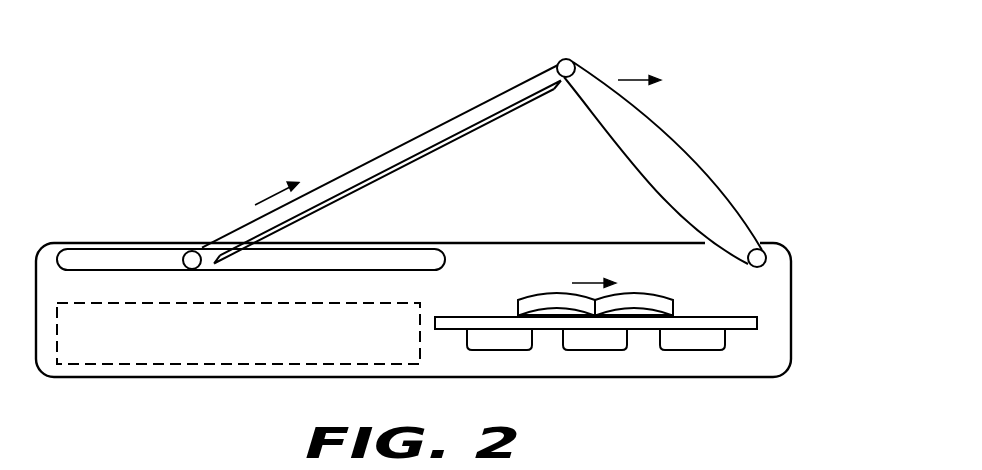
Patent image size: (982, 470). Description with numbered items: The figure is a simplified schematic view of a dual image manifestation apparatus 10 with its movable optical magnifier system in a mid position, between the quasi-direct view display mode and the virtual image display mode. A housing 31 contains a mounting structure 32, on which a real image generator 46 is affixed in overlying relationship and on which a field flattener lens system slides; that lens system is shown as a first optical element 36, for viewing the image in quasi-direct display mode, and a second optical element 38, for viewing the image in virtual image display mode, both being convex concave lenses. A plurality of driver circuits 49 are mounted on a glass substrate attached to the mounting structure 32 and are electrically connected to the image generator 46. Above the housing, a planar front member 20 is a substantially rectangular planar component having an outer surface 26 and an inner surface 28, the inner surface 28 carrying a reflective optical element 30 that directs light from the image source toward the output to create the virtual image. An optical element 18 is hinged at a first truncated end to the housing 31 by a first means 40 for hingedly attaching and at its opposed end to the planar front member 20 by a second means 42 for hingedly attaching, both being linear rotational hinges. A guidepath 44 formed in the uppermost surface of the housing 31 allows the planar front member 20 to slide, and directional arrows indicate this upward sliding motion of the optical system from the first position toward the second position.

The dual image manifestation apparatus 10 is at (588, 441).
The optical element 18 is at (651, 177).
The planar front member 20 is at (372, 163).
The outer surface 26 is at (484, 101).
The inner surface 28 is at (493, 117).
The reflective optical element 30 is at (385, 177).
The housing 31 is at (98, 382).
The mounting structure 32 is at (445, 316).
The first optical element 36 is at (661, 299).
The second optical element 38 is at (532, 299).
The first means for hingedly attaching 40 is at (765, 266).
The second means for hingedly attaching 42 is at (566, 58).
The guidepath 44 is at (157, 250).
The real image generator 46 is at (608, 350).
The driver circuits 49 is at (510, 350).